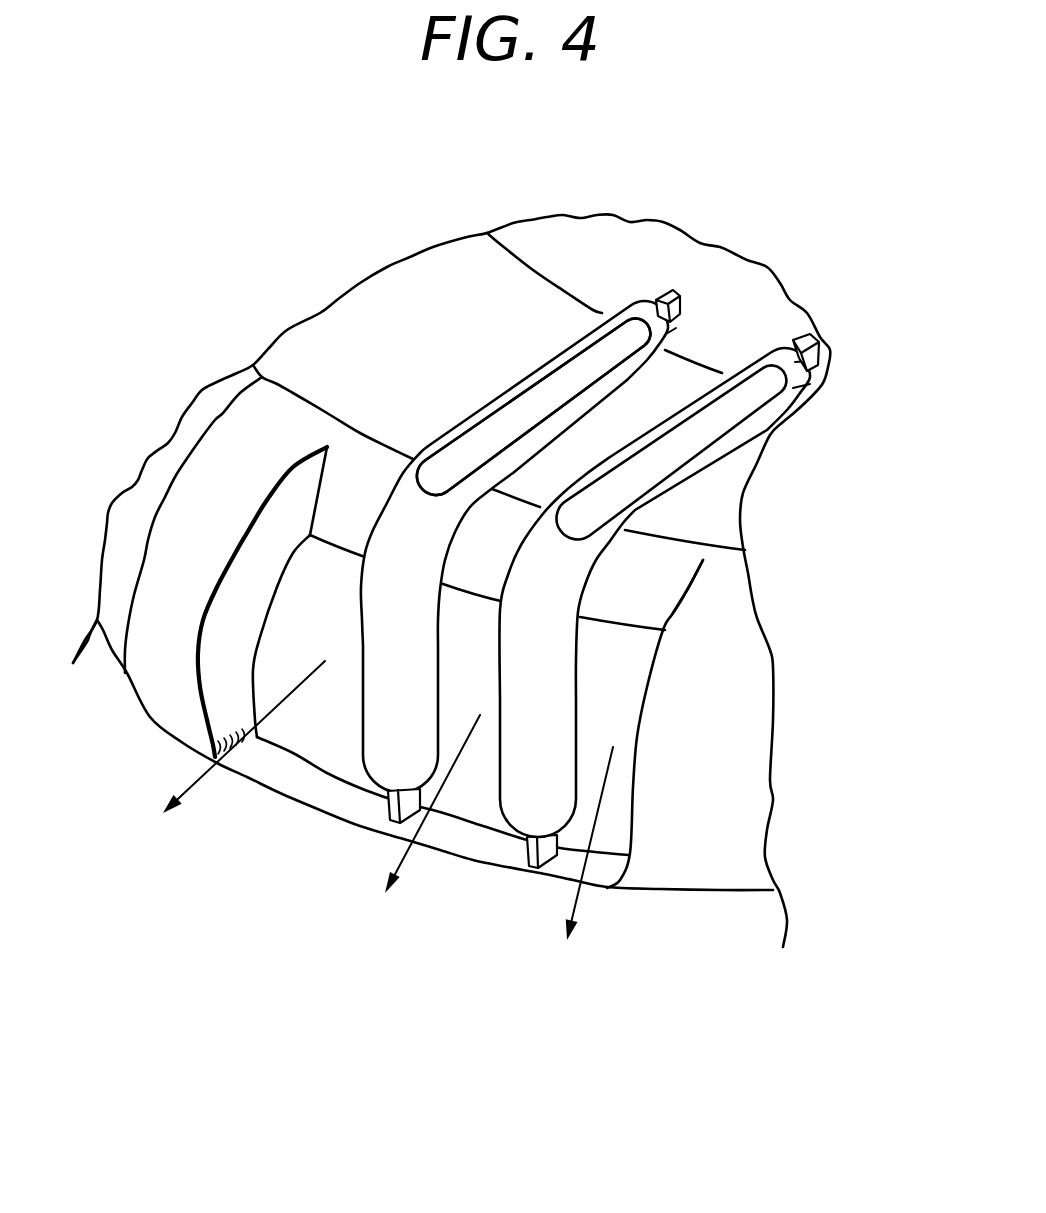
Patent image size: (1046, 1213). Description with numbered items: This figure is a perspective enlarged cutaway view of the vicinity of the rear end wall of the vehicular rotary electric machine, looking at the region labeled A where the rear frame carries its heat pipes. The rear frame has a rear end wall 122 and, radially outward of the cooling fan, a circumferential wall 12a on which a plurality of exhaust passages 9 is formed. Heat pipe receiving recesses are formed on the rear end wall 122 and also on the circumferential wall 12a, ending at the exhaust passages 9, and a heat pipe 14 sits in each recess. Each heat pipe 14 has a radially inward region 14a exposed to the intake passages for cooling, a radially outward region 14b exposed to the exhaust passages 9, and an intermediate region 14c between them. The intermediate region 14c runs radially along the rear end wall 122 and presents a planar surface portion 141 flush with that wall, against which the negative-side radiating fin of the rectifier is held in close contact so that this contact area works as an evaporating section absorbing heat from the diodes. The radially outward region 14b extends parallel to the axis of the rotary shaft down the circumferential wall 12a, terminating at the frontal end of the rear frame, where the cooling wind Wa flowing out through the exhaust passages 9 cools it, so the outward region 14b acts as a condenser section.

The region A of housing A is at (810, 293).
The exhaust passages 9 is at (317, 730).
The circumferential wall 12a is at (720, 868).
The rear end wall 122 is at (715, 495).
The heat pipe 14 is at (513, 510).
The radially inward region 14a is at (667, 338).
The radially outward region 14b is at (523, 700).
The intermediate region 14c is at (735, 442).
The planar surface portion 141 is at (622, 333).
The cooling wind Wa is at (603, 887).